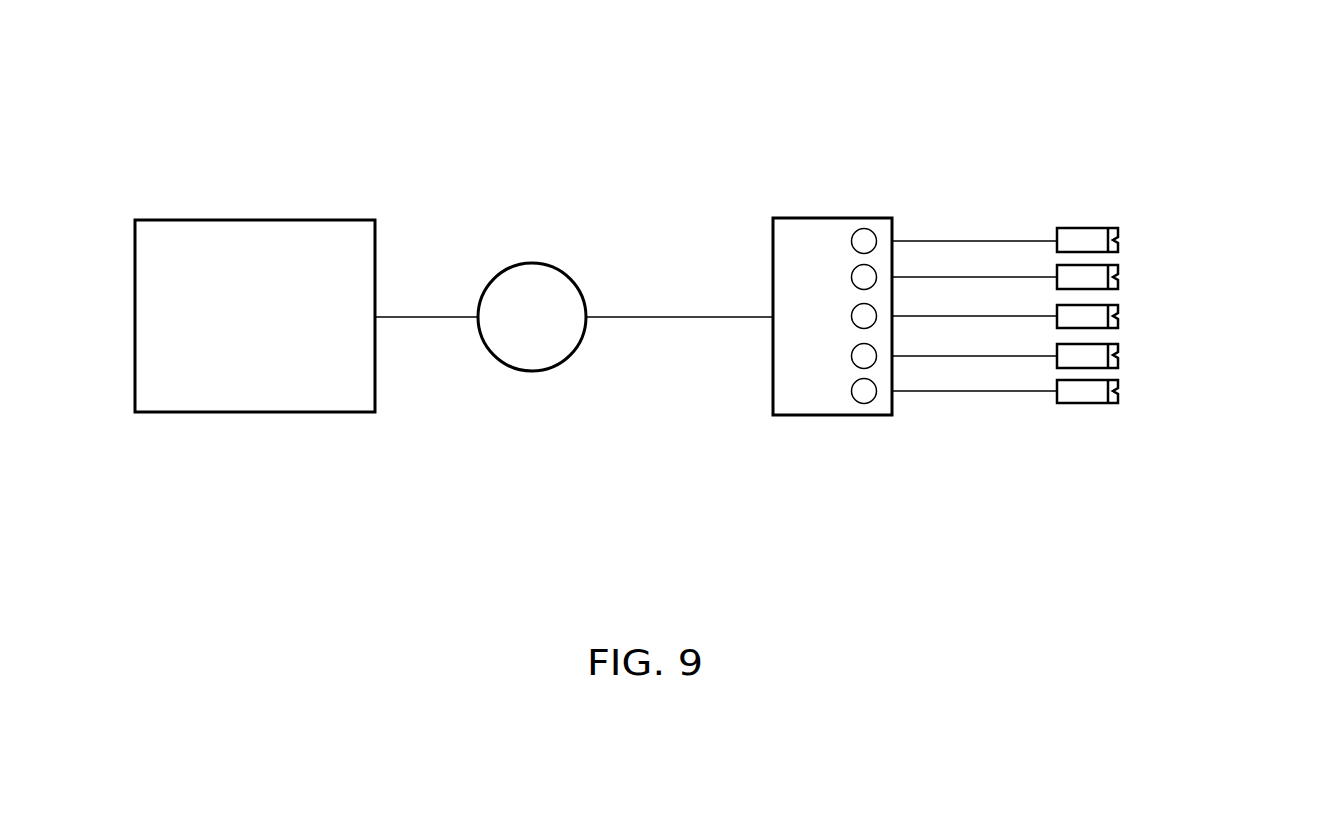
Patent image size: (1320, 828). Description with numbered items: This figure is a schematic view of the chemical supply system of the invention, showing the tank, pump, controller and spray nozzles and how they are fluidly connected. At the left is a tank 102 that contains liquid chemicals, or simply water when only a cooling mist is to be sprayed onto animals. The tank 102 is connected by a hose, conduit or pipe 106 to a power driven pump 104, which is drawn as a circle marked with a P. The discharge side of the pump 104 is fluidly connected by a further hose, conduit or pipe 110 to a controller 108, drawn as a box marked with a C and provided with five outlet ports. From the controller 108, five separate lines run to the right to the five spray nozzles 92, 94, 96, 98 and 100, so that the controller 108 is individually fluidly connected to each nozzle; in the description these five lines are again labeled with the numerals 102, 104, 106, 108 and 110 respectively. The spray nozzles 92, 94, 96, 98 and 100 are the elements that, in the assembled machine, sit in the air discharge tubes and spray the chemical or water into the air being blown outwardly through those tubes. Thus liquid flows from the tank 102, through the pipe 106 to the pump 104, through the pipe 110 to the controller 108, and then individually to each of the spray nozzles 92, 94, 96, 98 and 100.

The spray nozzle 92 is at (1105, 316).
The spray nozzle 94 is at (1105, 356).
The spray nozzle 96 is at (1105, 391).
The spray nozzle 98 is at (1105, 278).
The spray nozzle 100 is at (1105, 242).
The tank 102 is at (300, 218).
The pump 104 is at (536, 275).
The hose, conduit or pipe 106 is at (422, 316).
The controller 108 is at (773, 365).
The hose, conduit or pipe 110 is at (654, 316).